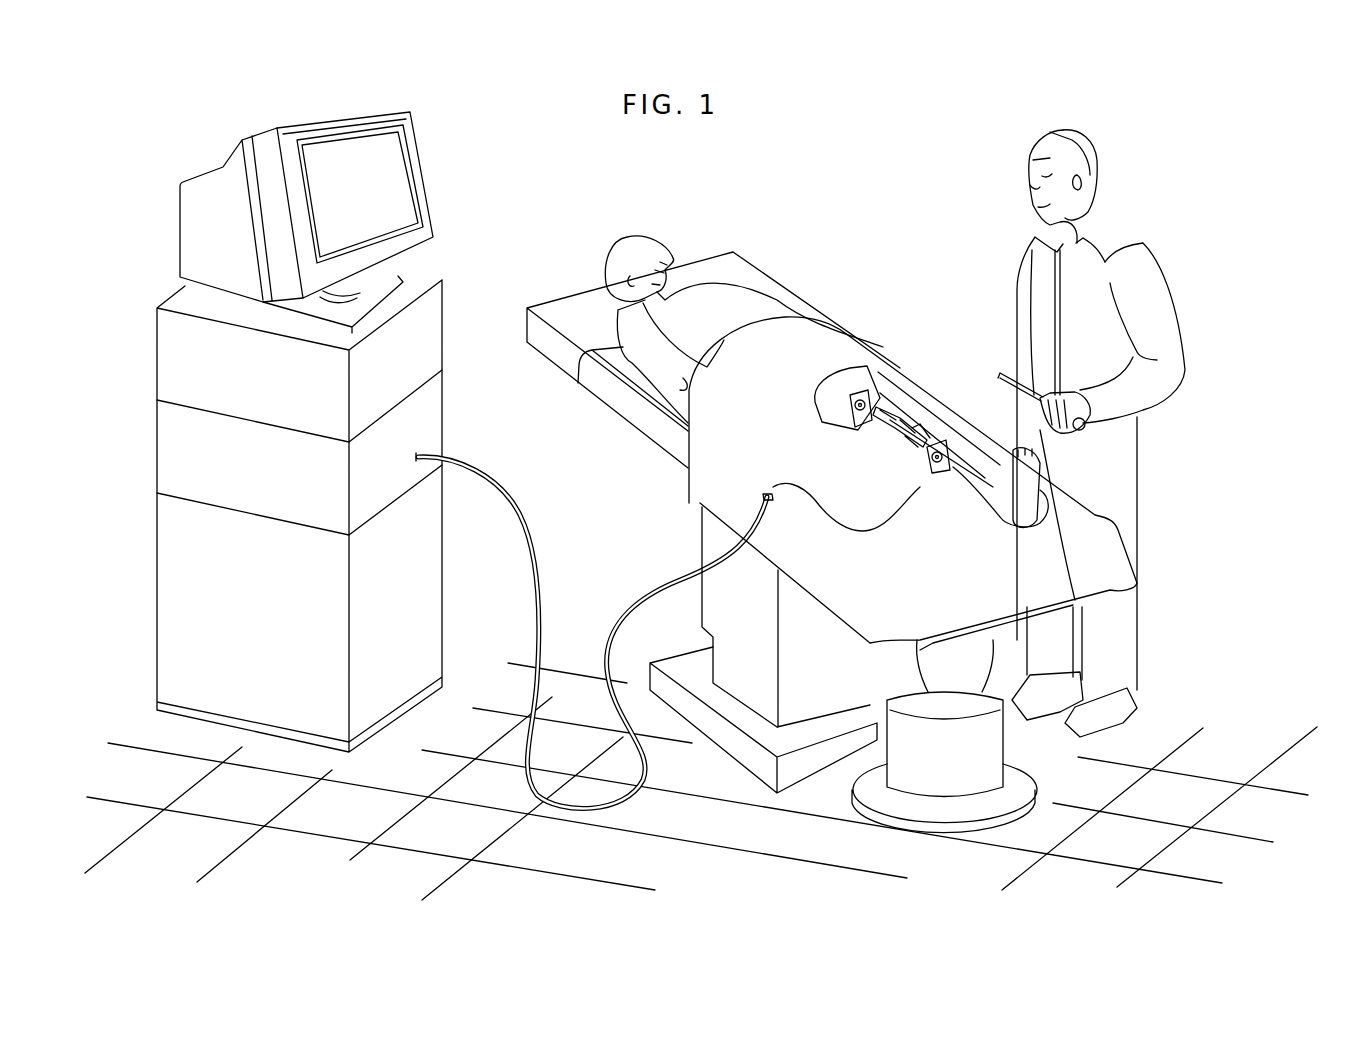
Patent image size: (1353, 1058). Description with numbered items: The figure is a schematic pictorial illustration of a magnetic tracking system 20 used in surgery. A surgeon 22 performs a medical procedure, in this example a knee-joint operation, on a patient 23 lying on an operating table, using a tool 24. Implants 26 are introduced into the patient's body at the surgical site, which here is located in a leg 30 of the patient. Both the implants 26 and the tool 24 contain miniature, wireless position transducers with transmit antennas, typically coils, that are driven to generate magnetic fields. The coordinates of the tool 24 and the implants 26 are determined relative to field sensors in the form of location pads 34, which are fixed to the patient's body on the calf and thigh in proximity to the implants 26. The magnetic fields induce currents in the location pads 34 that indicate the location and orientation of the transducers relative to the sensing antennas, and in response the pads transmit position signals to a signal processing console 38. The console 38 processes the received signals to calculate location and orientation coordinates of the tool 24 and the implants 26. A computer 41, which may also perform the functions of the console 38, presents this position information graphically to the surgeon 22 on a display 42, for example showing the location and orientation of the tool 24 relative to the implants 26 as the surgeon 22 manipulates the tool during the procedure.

The magnetic tracking system 20 is at (143, 147).
The surgeon 22 is at (1113, 238).
The patient 23 is at (700, 290).
The tool 24 is at (1112, 450).
The implants 26 is at (858, 415).
The leg 30 is at (895, 407).
The location pads 34 is at (843, 390).
The signal processing console 38 is at (433, 411).
The computer 41 is at (433, 342).
The display 42 is at (413, 152).